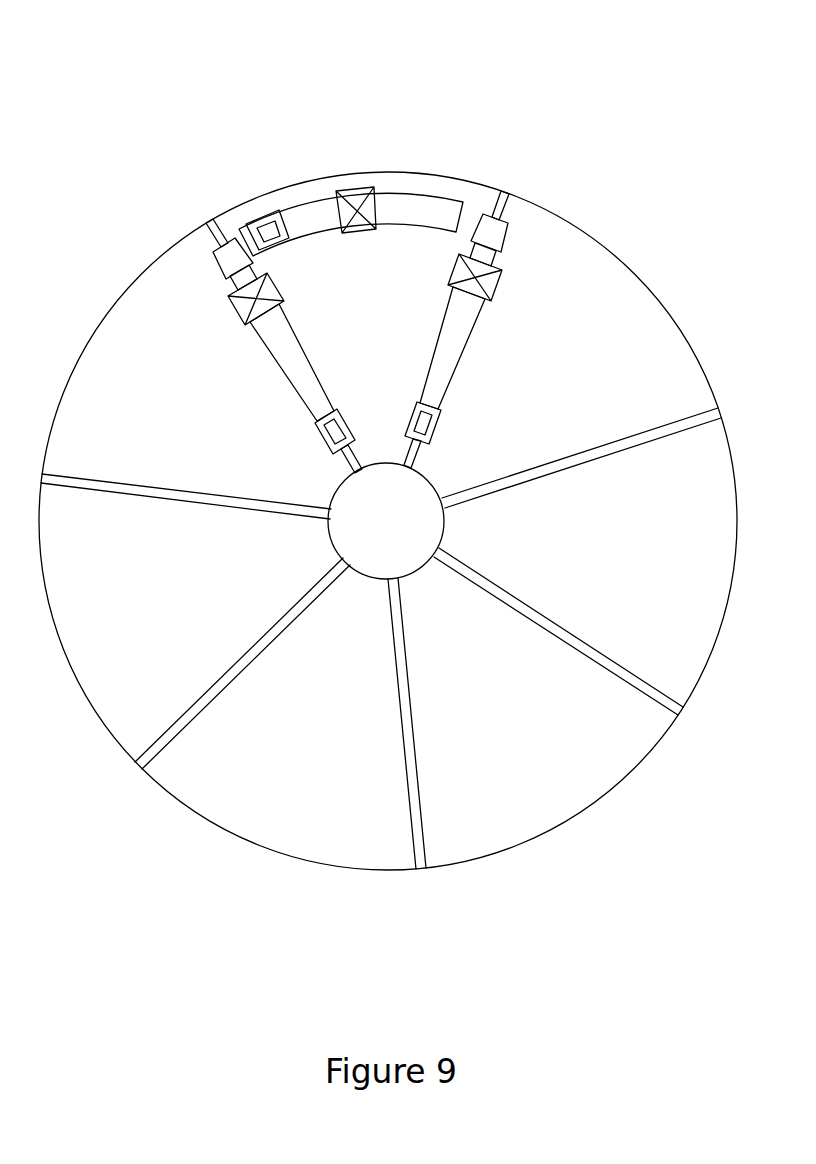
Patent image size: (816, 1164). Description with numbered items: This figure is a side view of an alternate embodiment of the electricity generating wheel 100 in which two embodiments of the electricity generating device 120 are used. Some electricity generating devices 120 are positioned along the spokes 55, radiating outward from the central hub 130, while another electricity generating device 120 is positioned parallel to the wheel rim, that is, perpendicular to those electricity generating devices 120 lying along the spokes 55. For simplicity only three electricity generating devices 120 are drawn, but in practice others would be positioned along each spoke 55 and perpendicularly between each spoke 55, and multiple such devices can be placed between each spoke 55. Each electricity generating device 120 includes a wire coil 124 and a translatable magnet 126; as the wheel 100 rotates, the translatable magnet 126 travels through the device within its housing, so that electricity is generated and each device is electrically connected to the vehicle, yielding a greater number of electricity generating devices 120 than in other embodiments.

The electricity generating wheel 100 is at (550, 115).
The spoke 55 is at (505, 202).
The electricity generating device 120 is at (396, 195).
The wire coil 124 is at (355, 203).
The translatable magnet 126 is at (272, 228).
The hub 130 is at (407, 522).